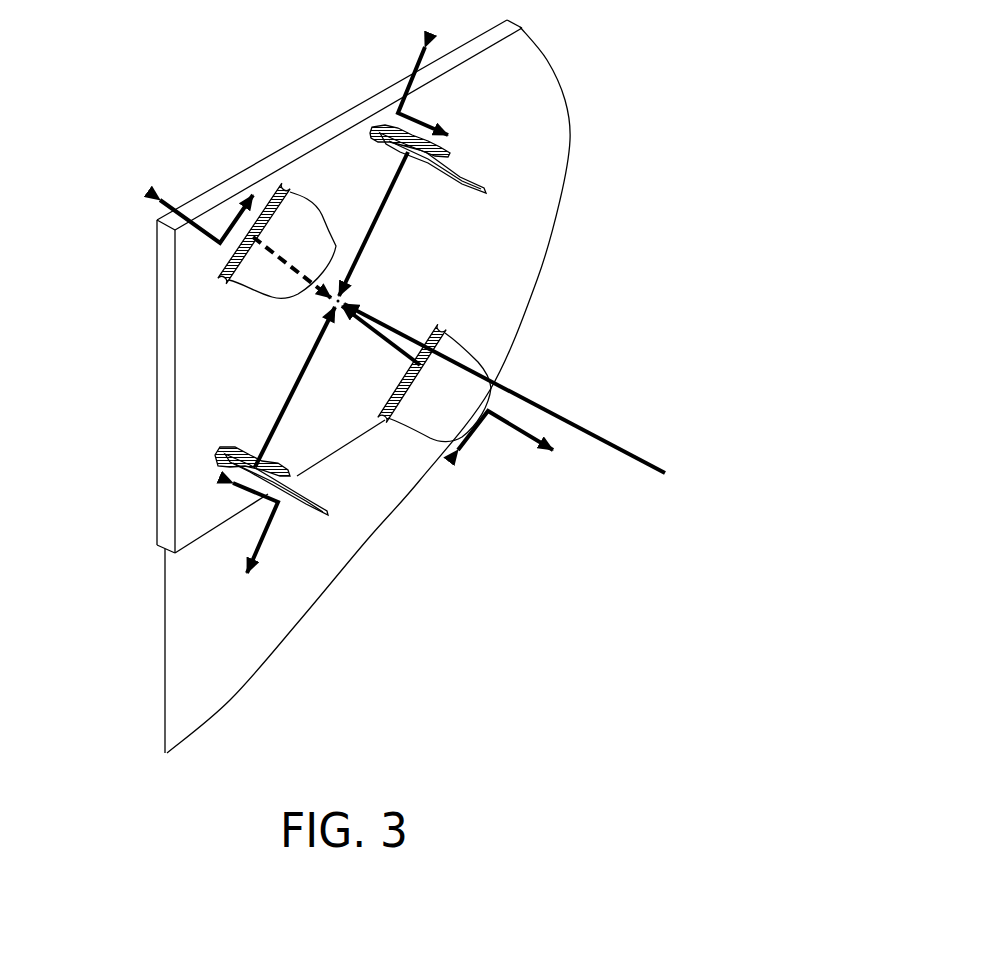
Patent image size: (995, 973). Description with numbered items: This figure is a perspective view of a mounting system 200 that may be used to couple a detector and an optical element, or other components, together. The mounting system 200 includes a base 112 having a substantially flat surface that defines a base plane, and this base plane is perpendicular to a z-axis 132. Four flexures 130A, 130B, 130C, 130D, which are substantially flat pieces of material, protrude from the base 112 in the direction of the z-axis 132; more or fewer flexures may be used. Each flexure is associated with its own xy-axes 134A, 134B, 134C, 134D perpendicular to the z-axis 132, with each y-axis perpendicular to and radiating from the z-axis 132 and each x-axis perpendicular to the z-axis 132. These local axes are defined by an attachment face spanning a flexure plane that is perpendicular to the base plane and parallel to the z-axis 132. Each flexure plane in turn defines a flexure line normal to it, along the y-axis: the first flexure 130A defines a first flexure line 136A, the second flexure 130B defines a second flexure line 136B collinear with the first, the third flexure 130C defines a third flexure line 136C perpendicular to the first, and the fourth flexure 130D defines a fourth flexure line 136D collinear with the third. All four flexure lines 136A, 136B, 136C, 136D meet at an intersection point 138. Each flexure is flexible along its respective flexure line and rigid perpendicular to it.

The mounting system 200 is at (594, 37).
The base 112 is at (190, 264).
The first flexure 130A is at (327, 231).
The second flexure 130B is at (470, 174).
The third flexure 130C is at (425, 426).
The fourth flexure 130D is at (332, 507).
The z-axis 132 is at (637, 458).
The xy-axes of first flexure 134A is at (180, 212).
The xy-axes of second flexure 134B is at (392, 88).
The xy-axes of third flexure 134C is at (522, 436).
The xy-axes of fourth flexure 134D is at (262, 557).
The first flexure line 136A is at (328, 298).
The second flexure line 136B is at (374, 229).
The third flexure line 136C is at (384, 347).
The fourth flexure line 136D is at (280, 413).
The intersection point 138 is at (348, 303).